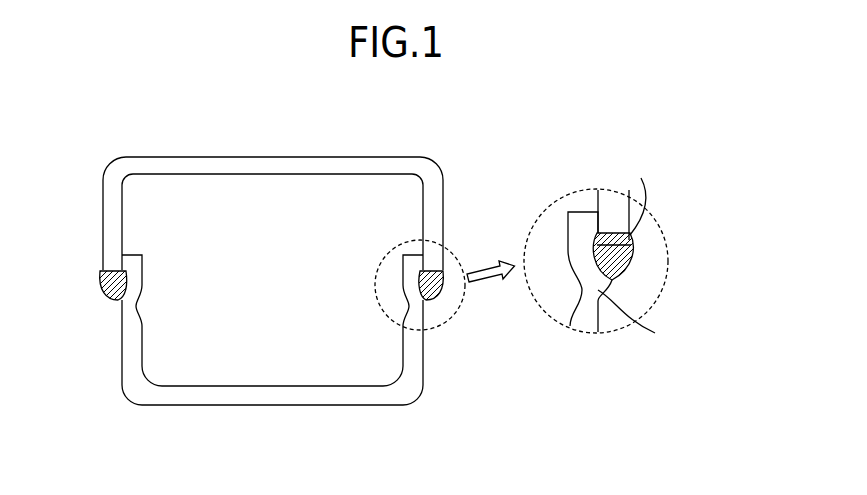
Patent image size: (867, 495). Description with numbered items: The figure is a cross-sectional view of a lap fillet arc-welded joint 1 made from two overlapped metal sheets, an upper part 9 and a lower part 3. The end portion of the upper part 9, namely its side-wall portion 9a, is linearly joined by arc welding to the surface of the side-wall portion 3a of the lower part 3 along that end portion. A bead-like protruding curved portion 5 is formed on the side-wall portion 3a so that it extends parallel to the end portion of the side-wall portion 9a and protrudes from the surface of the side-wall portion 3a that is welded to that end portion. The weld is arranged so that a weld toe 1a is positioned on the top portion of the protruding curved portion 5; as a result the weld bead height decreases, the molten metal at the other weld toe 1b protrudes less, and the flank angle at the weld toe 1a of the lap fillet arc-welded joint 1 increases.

The lap fillet arc-welded joint 1 is at (459, 255).
The weld toe 1a is at (640, 318).
The weld toe 1b is at (643, 194).
The lower part 3 is at (262, 406).
The side-wall portion of the lower part 3a is at (122, 345).
The bead-like protruding curved portion 5 is at (117, 313).
The upper part 9 is at (277, 157).
The side-wall portion of the upper part 9a is at (103, 240).